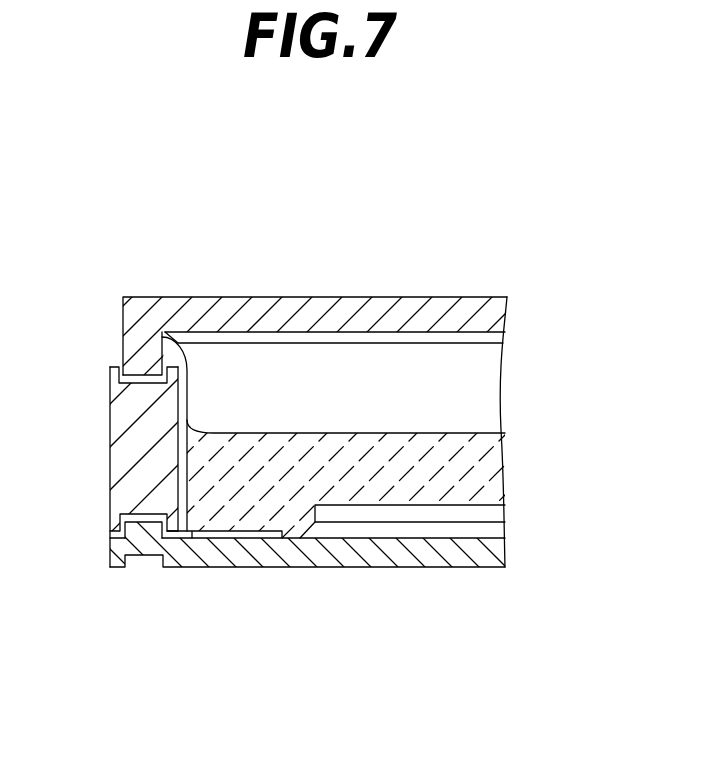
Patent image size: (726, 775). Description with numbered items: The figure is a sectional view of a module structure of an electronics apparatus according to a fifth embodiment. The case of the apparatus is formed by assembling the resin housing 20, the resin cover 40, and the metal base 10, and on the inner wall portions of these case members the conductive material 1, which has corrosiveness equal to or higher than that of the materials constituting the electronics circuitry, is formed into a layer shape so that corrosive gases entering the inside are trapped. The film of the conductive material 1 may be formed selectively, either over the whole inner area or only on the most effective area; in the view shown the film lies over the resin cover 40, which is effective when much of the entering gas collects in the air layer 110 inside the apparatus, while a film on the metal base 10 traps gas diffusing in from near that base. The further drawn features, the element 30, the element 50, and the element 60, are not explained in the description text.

The sheet member 1 is at (313, 337).
The bottom plate 10 is at (320, 555).
The side wall member 20 is at (120, 467).
The plate 30 is at (503, 508).
The upper wall 40 is at (386, 308).
The projection 50 is at (110, 537).
The filler body 60 is at (503, 440).
The gap 110 is at (240, 358).